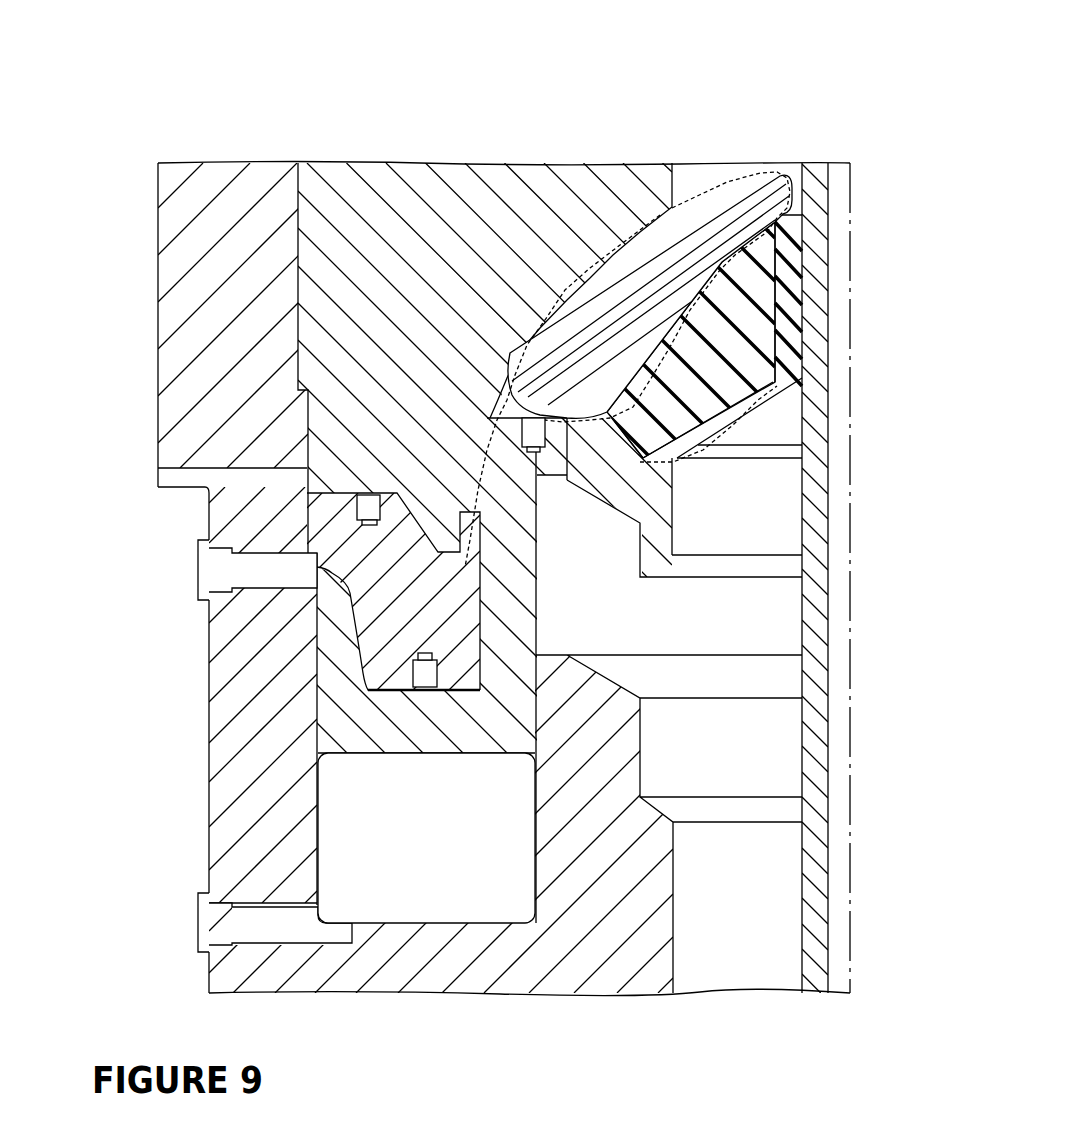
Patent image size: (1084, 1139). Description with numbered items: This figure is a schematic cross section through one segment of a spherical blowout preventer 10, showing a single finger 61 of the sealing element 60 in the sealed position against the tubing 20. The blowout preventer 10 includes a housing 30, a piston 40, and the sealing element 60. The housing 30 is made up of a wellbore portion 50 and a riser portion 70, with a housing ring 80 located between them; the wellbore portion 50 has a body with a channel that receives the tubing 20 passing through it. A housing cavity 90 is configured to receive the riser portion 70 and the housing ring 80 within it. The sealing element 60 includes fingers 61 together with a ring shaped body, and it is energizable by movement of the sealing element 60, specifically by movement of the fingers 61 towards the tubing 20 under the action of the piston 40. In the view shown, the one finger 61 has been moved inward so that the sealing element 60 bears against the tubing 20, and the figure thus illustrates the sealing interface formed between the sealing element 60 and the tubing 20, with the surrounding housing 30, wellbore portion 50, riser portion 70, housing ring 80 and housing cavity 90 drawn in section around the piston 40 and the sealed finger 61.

The blowout preventer 10 is at (166, 98).
The tubing 20 is at (813, 208).
The housing 30 is at (190, 208).
The piston 40 is at (337, 723).
The wellbore portion 50 is at (228, 973).
The sealing element 60 is at (730, 163).
The finger 61 is at (660, 215).
The riser portion 70 is at (507, 185).
The housing ring 80 is at (323, 530).
The housing cavity 90 is at (342, 845).